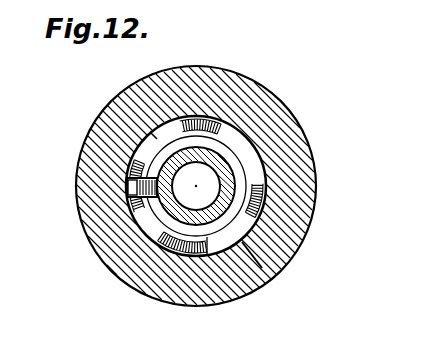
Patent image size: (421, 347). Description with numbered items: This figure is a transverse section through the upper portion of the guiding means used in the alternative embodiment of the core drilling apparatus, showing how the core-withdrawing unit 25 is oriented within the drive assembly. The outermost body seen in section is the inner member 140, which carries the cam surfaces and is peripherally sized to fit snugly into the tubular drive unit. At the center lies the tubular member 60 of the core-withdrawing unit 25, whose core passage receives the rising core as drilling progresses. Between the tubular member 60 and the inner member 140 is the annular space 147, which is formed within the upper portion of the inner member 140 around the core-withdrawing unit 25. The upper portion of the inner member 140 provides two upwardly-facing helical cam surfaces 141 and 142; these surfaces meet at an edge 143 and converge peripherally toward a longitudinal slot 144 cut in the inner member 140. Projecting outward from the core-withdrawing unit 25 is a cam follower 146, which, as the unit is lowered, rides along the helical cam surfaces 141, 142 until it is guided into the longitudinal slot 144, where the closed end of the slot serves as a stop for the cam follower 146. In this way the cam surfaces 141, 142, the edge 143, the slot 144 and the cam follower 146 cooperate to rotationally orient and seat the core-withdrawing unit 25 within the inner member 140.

The inner member 140 is at (142, 123).
The helical cam surface 141 is at (230, 133).
The helical cam surface 142 is at (237, 237).
The edge 143 is at (267, 177).
The longitudinal slot 144 is at (127, 186).
The cam follower 146 is at (128, 195).
The annular space 147 is at (233, 158).
The tubular member 60 is at (175, 213).
The core-withdrawing unit 25 is at (205, 233).